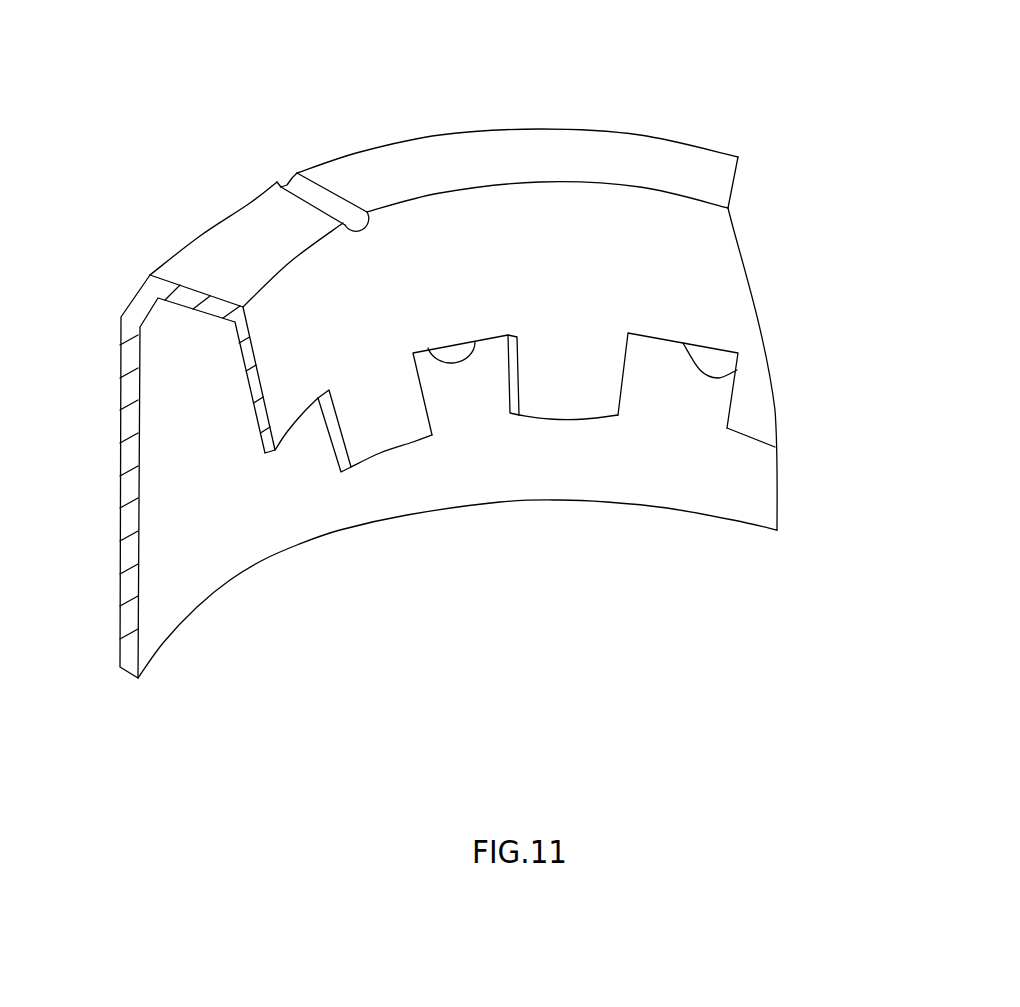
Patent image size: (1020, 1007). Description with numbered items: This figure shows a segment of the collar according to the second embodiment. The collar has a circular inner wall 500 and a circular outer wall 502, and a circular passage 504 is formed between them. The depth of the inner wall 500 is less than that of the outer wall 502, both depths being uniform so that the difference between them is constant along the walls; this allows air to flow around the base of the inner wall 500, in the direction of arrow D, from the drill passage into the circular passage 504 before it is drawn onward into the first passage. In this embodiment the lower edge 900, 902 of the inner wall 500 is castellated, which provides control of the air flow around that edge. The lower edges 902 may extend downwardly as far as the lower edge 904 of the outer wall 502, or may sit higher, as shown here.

The circular inner wall 500 is at (537, 258).
The circular outer wall 502 is at (588, 453).
The circular passage 504 is at (661, 493).
The lower edge 900 is at (428, 348).
The lower edge 902 is at (548, 420).
The lower edge of the outer wall 904 is at (203, 593).
The arrow D is at (762, 388).